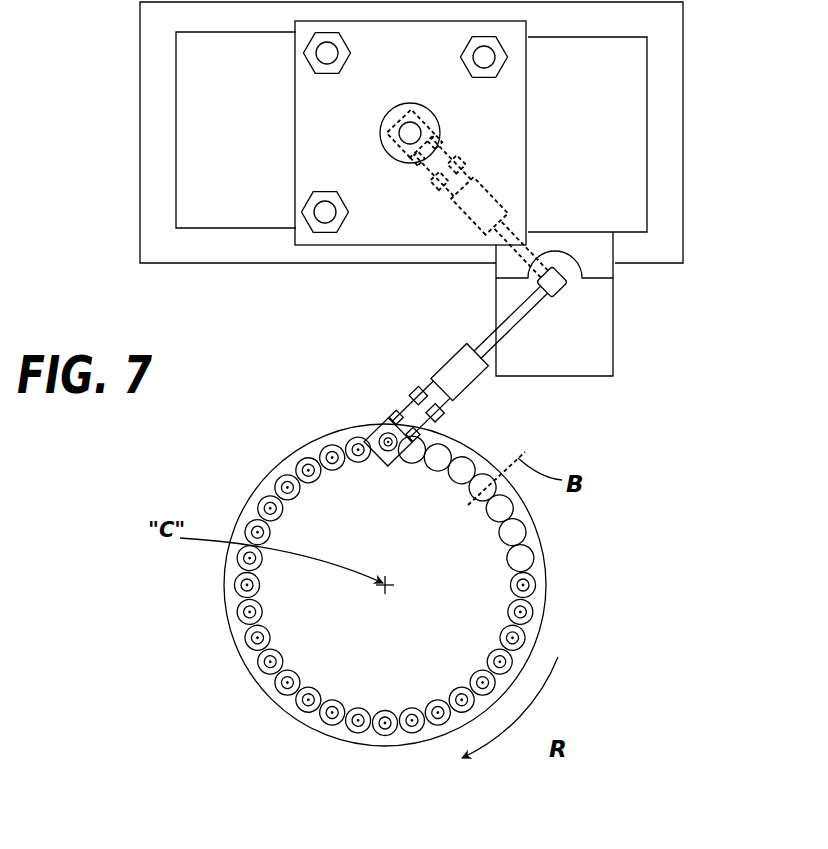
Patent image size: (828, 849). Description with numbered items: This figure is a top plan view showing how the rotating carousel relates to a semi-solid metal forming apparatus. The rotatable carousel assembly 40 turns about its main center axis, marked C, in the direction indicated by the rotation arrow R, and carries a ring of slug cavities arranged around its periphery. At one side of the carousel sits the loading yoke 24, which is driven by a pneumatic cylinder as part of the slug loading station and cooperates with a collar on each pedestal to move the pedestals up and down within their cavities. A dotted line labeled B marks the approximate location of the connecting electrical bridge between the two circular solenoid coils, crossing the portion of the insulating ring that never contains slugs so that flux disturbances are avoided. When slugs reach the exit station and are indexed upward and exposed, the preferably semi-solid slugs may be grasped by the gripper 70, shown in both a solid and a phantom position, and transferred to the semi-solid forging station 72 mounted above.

The semi-solid forging station 72 is at (697, 135).
The gripper 70 is at (484, 398).
The loading yoke 24 is at (377, 420).
The carousel assembly 40 is at (178, 632).